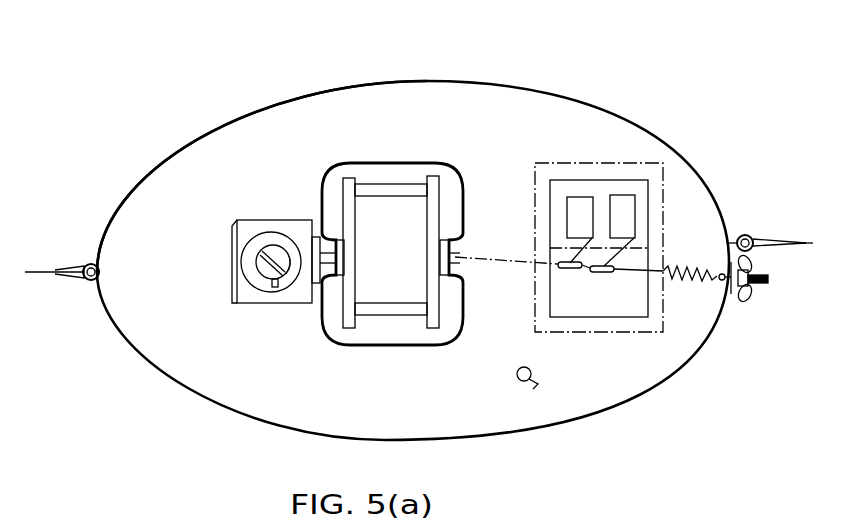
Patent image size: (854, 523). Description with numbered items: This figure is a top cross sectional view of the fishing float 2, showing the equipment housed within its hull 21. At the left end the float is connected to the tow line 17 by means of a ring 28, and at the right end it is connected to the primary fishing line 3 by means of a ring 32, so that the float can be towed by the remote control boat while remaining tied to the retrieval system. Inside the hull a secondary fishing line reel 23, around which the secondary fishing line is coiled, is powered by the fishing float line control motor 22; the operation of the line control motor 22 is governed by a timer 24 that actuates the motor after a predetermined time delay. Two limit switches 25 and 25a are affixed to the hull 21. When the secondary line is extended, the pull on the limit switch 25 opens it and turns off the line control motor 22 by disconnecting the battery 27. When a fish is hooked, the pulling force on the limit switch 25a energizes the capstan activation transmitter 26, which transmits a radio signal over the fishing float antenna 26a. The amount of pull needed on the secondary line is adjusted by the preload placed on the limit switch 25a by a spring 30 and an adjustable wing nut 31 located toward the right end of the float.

The fishing float 2 is at (413, 220).
The hull 21 is at (262, 168).
The tow line 17 is at (53, 232).
The ring 28 is at (74, 310).
The fishing float line control motor 22 is at (284, 228).
The timer 24 is at (267, 305).
The secondary fishing line reel 23 is at (408, 250).
The battery 27 is at (625, 223).
The capstan activation transmitter 26 is at (559, 289).
The limit switch 25 is at (565, 184).
The limit switch 25a is at (615, 184).
The fishing float antenna 26a is at (534, 432).
The spring 30 is at (697, 246).
The adjustable wing nut 31 is at (749, 311).
The ring 32 is at (750, 205).
The primary fishing line 3 is at (787, 275).